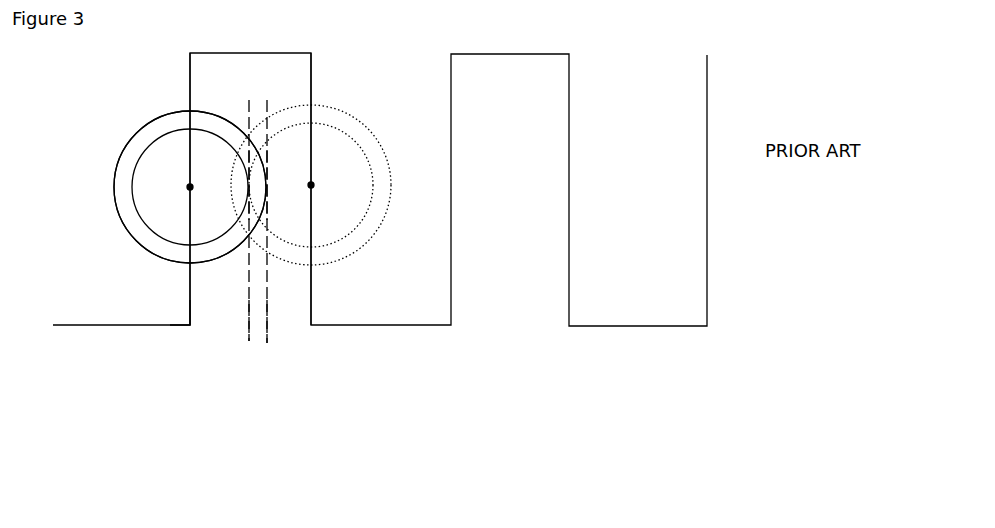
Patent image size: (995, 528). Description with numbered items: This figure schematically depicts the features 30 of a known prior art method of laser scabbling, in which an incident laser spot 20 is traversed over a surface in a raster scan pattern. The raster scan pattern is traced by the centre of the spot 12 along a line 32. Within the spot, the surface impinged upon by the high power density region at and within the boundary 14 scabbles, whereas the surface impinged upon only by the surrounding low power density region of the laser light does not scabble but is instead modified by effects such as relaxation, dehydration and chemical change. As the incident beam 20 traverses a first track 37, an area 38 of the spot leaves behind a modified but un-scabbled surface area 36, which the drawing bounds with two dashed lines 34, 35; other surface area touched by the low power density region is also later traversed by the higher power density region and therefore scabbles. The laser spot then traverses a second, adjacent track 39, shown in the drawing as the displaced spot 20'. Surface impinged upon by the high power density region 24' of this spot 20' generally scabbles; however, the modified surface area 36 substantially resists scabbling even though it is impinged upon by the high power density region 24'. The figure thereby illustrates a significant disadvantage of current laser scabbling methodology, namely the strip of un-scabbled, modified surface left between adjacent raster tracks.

The centre of the spot 12 is at (188, 187).
The boundary 14 is at (130, 190).
The incident laser spot 20 is at (153, 179).
The spot on second track 20' is at (332, 171).
The high power density region 24' is at (341, 185).
The features of the method 30 is at (428, 40).
The raster scan pattern line 32 is at (190, 82).
The first threshold line 34 is at (247, 343).
The second threshold line 35 is at (265, 343).
The modified un-scabbled surface area 36 is at (257, 321).
The first track 37 is at (189, 305).
The area of the spot 38 is at (262, 183).
The second track 39 is at (311, 77).